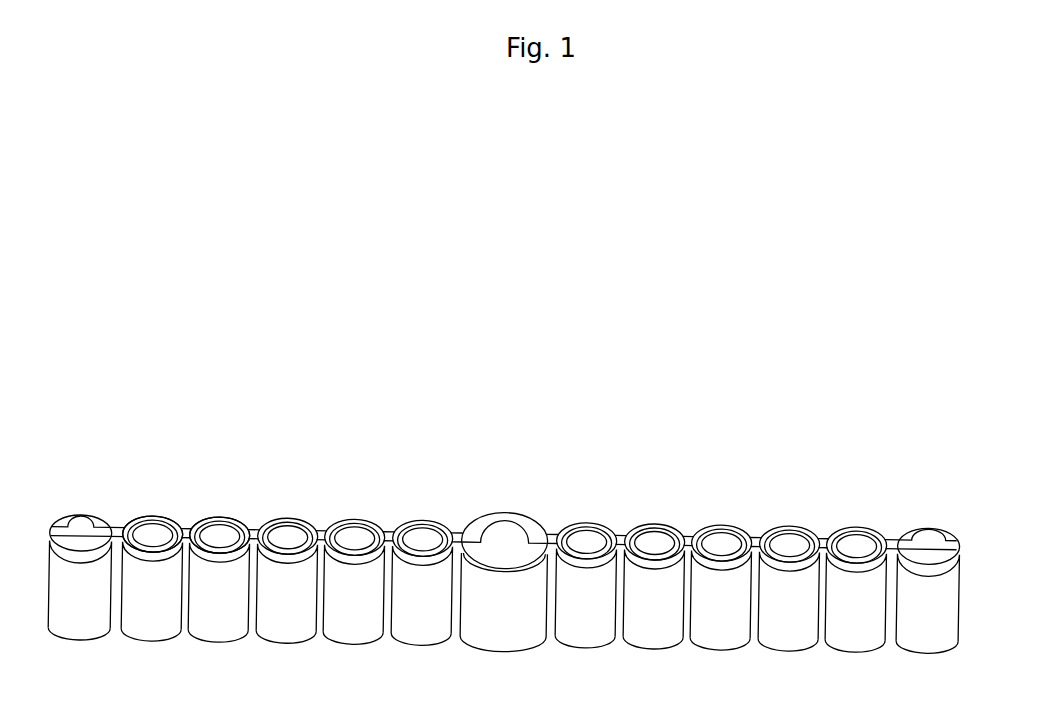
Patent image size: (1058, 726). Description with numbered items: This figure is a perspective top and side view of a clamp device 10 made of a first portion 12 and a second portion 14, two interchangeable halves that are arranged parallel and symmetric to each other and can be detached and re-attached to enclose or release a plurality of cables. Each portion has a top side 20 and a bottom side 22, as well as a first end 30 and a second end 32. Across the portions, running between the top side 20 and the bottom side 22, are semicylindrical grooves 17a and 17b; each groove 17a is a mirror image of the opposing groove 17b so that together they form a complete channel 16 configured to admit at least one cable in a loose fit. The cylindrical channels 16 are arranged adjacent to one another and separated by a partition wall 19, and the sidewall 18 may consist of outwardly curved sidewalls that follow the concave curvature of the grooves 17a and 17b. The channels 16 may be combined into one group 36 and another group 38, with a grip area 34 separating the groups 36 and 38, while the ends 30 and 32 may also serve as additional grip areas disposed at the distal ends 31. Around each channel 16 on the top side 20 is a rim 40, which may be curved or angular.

The clamp device 10 is at (469, 436).
The first portion 12 is at (430, 528).
The second portion 14 is at (437, 628).
The channel 16 is at (787, 550).
The semicylindrical groove 17a is at (717, 537).
The semicylindrical groove 17b is at (732, 556).
The sidewall 18 is at (277, 619).
The partition wall 19 is at (823, 540).
The top side 20 is at (216, 502).
The bottom side 22 is at (219, 650).
The first end 30 is at (918, 540).
The distal ends 31 is at (949, 525).
The second end 32 is at (84, 520).
The grip area 34 is at (508, 527).
The group 36 is at (264, 456).
The another group 38 is at (692, 468).
The rim 40 is at (142, 509).